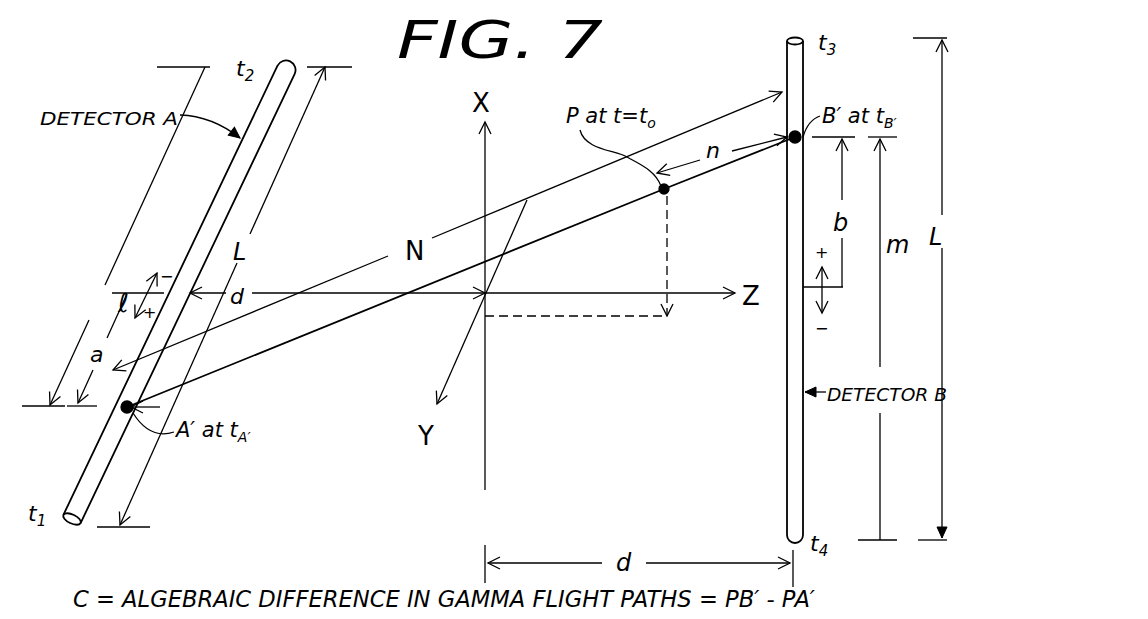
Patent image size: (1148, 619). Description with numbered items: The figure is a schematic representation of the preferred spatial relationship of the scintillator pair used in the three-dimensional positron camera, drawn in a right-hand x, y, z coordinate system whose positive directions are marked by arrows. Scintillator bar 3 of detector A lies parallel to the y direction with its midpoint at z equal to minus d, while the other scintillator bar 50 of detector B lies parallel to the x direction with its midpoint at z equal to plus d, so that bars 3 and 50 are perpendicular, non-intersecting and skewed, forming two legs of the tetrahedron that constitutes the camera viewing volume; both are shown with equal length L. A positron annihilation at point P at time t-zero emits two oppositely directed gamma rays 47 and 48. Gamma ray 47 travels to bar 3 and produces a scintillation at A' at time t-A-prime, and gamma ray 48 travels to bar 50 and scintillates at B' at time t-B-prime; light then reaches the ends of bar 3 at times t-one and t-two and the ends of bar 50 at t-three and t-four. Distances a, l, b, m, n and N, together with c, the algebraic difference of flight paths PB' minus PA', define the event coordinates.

The scintillator bar 3 is at (219, 188).
The gamma ray 47 is at (306, 335).
The gamma ray 48 is at (707, 172).
The scintillator bar 50 is at (787, 412).